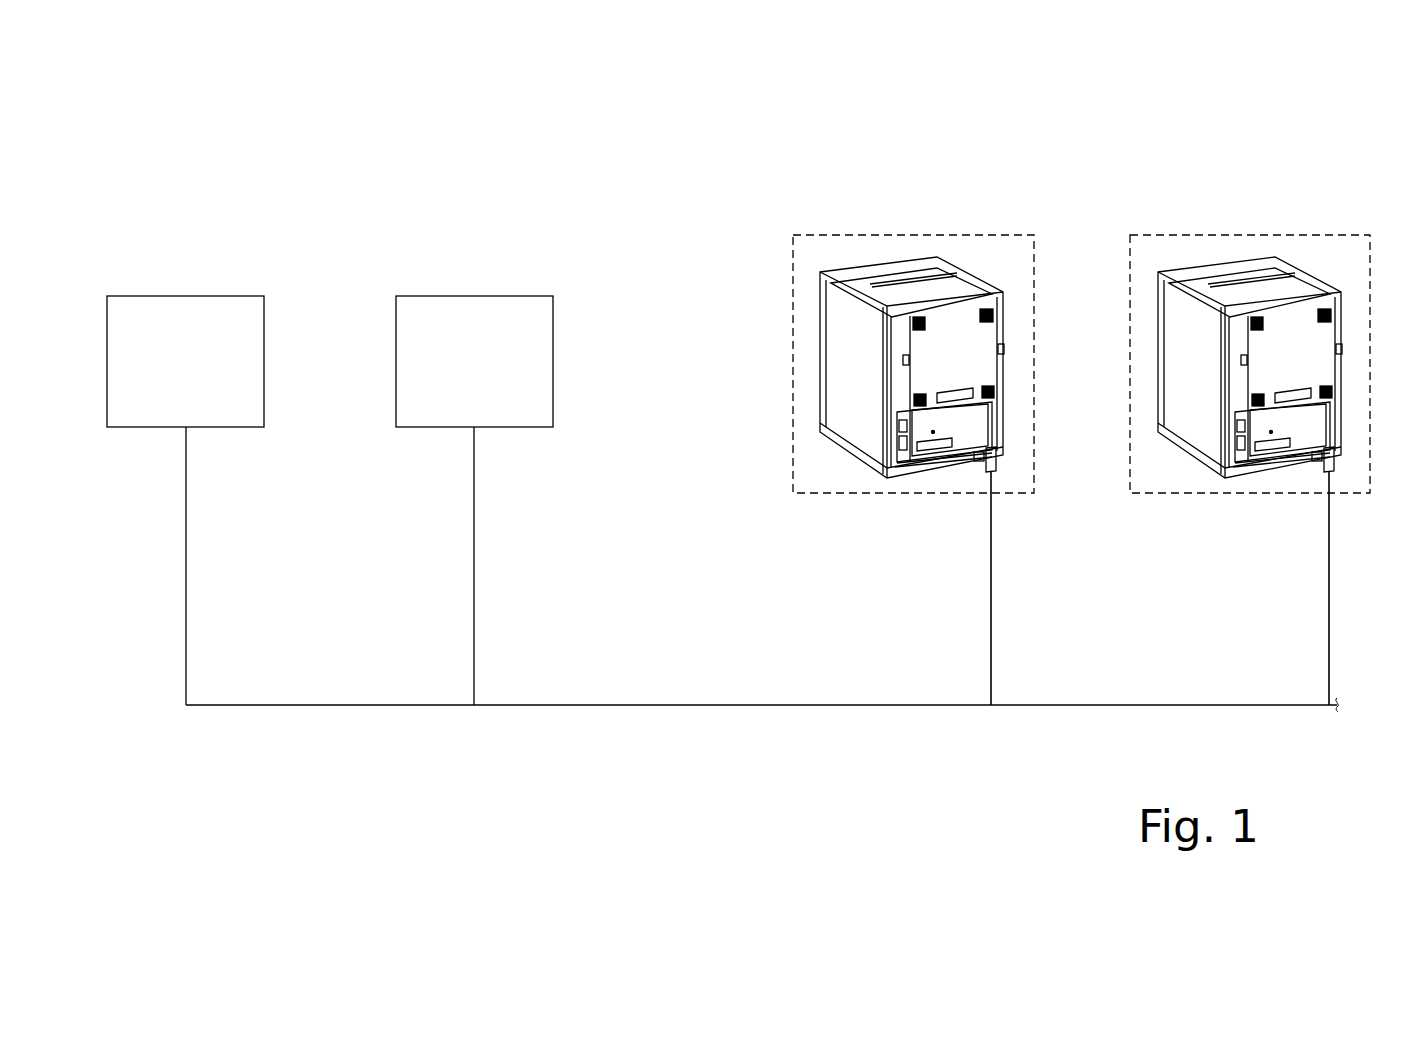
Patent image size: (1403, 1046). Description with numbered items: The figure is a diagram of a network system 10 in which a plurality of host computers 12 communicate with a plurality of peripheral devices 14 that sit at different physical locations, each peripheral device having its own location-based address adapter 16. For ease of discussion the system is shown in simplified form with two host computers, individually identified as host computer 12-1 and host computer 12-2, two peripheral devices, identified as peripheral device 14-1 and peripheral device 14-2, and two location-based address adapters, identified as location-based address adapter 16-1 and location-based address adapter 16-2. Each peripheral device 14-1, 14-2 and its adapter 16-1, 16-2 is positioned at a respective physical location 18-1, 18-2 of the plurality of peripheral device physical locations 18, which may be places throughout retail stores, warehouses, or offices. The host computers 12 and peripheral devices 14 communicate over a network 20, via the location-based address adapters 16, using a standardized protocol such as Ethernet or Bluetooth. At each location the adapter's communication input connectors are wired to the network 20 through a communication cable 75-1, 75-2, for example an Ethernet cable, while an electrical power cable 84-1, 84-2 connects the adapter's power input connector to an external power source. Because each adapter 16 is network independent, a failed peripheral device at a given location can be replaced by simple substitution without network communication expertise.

The network system 10 is at (303, 152).
The host computers 12 is at (103, 289).
The host computer 12-1 is at (185, 361).
The host computer 12-2 is at (474, 361).
The peripheral devices 14 is at (1010, 177).
The peripheral device 14-1 is at (978, 273).
The peripheral device 14-2 is at (1185, 268).
The location-based address adapters 16 is at (1055, 563).
The location-based address adapter 16-1 is at (997, 428).
The location-based address adapter 16-2 is at (1273, 463).
The peripheral device physical locations 18 is at (790, 125).
The physical location 18-1 is at (877, 235).
The physical location 18-2 is at (1288, 235).
The network 20 is at (702, 706).
The communication cable 75-1 is at (980, 465).
The communication cable 75-2 is at (1320, 465).
The electrical power cable 84-1 is at (1003, 467).
The electrical power cable 84-2 is at (1342, 467).